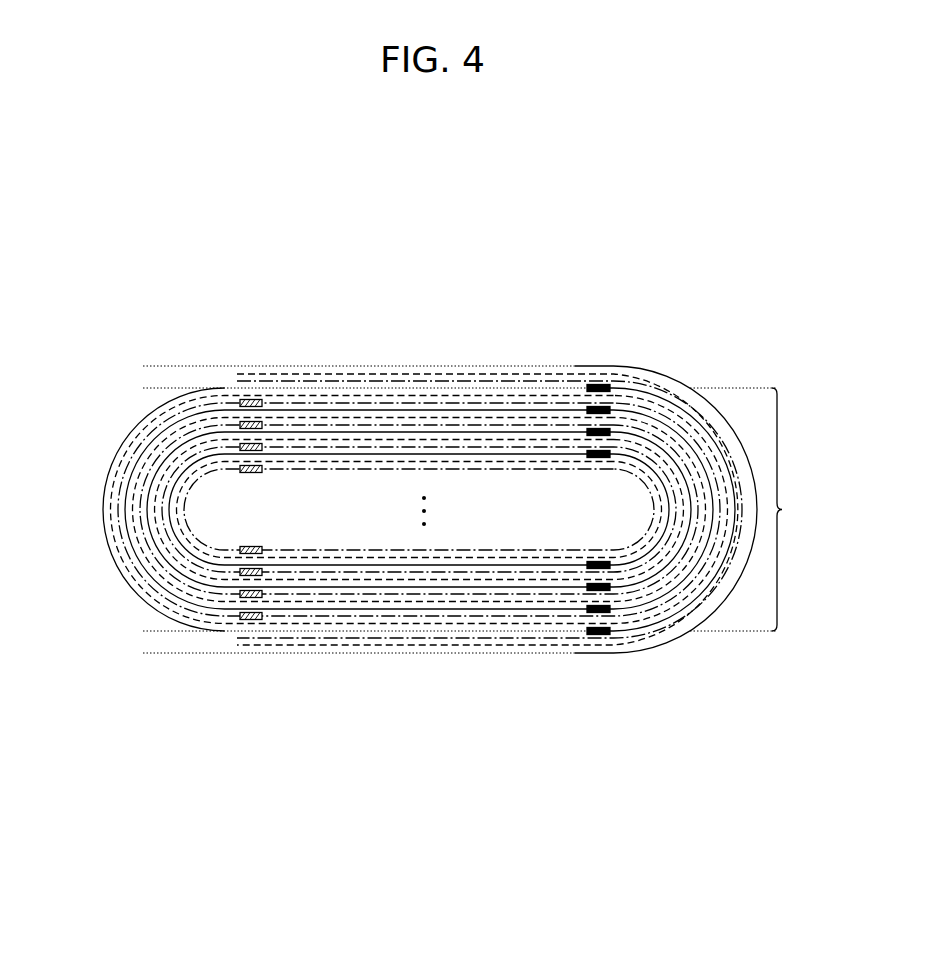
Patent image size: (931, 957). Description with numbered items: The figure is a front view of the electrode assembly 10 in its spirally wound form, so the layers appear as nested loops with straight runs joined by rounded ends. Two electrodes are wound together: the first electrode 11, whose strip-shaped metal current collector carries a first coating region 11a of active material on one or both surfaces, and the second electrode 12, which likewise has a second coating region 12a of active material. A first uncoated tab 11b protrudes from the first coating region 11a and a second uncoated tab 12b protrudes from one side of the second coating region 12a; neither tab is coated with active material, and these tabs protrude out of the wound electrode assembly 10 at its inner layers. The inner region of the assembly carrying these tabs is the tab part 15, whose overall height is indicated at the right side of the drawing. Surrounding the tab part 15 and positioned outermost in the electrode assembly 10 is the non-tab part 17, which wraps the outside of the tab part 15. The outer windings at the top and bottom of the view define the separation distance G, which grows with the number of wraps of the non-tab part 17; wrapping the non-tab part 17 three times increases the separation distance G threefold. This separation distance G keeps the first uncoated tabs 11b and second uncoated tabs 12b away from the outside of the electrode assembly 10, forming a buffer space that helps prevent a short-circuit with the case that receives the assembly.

The electrode assembly 10 is at (441, 266).
The first electrode 11 is at (430, 593).
The first coating region 11a is at (312, 548).
The first uncoated tab 11b is at (263, 550).
The second electrode 12 is at (419, 596).
The second coating region 12a is at (513, 565).
The second uncoated tab 12b is at (586, 565).
The tab part 15 is at (755, 509).
The non-tab part 17 is at (120, 438).
The separation distance G is at (135, 366).